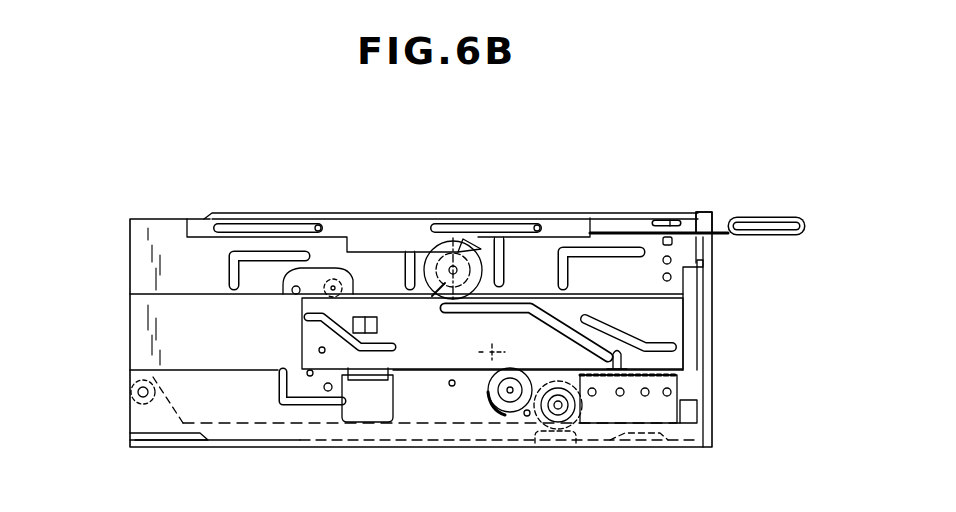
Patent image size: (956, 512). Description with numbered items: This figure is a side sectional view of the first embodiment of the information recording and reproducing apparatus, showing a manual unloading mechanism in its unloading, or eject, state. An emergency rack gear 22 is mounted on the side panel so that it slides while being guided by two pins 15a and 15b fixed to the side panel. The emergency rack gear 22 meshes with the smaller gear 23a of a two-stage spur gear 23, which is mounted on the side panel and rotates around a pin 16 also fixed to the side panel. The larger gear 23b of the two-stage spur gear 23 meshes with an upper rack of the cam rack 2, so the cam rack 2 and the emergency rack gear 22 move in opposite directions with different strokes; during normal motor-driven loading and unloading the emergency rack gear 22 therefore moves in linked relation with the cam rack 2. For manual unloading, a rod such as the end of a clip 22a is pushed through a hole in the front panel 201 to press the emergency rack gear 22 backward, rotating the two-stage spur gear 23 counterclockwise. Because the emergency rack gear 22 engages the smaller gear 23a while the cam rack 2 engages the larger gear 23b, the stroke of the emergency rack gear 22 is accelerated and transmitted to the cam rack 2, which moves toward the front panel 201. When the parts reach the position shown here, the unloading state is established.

The cam rack 2 is at (675, 330).
The pin 15a is at (319, 223).
The pin 15b is at (541, 218).
The pin 16 is at (445, 250).
The emergency rack gear 22 is at (368, 226).
The clip 22a is at (783, 216).
The two-stage spur gear 23 is at (500, 213).
The smaller gear 23a is at (426, 300).
The larger gear 23b is at (470, 238).
The front panel 201 is at (706, 211).